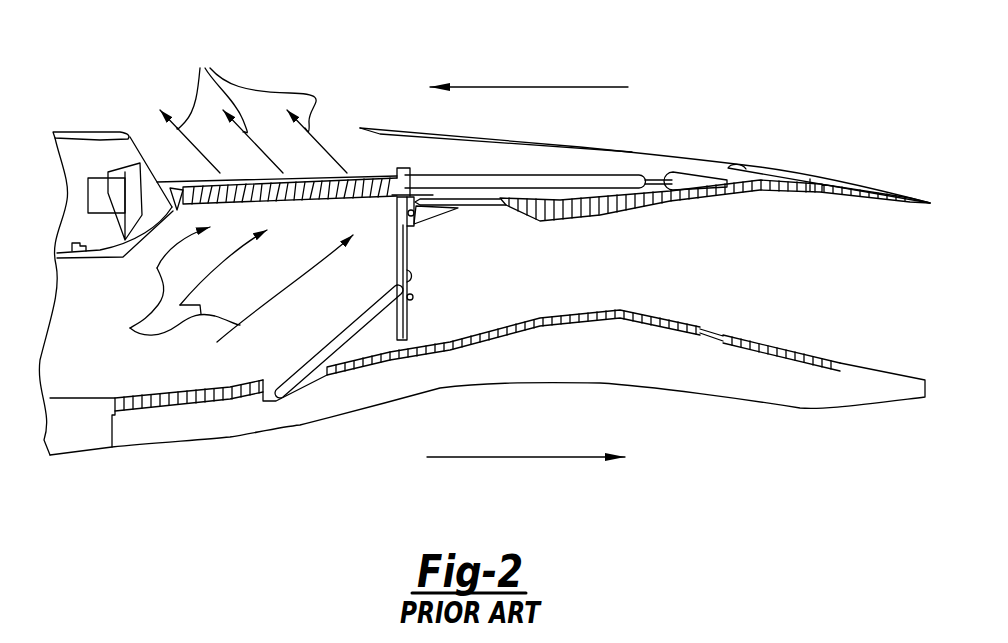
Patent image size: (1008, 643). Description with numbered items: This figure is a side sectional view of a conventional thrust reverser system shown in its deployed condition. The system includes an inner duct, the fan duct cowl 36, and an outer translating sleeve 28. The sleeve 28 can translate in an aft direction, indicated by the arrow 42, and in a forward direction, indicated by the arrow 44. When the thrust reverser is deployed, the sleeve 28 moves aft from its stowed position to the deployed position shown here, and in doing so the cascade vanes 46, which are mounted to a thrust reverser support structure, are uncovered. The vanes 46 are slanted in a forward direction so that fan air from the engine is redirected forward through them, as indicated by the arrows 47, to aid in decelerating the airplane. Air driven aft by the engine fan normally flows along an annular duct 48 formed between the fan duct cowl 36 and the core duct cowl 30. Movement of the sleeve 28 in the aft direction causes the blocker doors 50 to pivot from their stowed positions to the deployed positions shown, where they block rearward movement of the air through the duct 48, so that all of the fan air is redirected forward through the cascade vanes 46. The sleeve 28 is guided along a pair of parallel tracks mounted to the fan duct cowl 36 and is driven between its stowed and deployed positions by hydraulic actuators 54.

The translating sleeve 28 is at (632, 152).
The core duct cowl 30 is at (623, 310).
The fan duct cowl 36 is at (622, 213).
The aft direction arrow 42 is at (557, 457).
The forward direction arrow 44 is at (553, 87).
The cascade vanes 46 is at (322, 200).
The redirected fan air arrows 47 is at (229, 198).
The annular duct 48 is at (327, 329).
The blocker doors 50 is at (411, 317).
The hydraulic actuator 54 is at (474, 176).